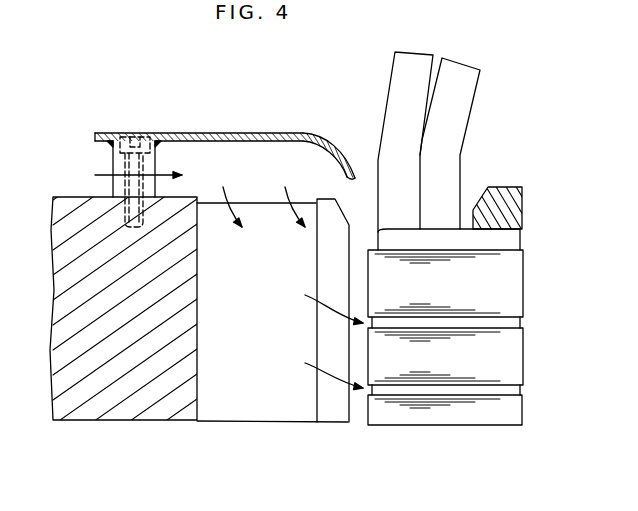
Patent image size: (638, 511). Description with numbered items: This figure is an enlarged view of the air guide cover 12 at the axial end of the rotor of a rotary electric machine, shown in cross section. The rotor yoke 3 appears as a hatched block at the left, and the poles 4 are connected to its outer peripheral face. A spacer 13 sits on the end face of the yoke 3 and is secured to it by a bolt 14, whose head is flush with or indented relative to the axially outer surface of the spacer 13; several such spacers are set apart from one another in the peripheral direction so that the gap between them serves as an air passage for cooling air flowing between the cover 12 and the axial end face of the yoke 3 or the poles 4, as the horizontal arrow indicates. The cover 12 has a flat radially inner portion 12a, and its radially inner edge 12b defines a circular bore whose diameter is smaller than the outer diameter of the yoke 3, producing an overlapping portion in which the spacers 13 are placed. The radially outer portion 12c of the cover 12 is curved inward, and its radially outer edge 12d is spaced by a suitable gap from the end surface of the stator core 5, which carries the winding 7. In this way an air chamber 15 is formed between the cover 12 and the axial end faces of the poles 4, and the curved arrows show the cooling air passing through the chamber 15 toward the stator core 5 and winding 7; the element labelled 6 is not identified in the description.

The yoke 3 is at (117, 420).
The poles 4 is at (333, 420).
The stator core 5 is at (420, 413).
The lower body portion 6 is at (493, 390).
The winding 7 is at (470, 119).
The guide cover 12 is at (217, 134).
The radially inner portion 12a is at (168, 132).
The radially inner edge 12b is at (95, 137).
The radially outer portion 12c is at (334, 148).
The radially outer edge 12d is at (348, 186).
The spacers 13 is at (155, 158).
The bolts 14 is at (135, 136).
The air chamber 15 is at (242, 153).